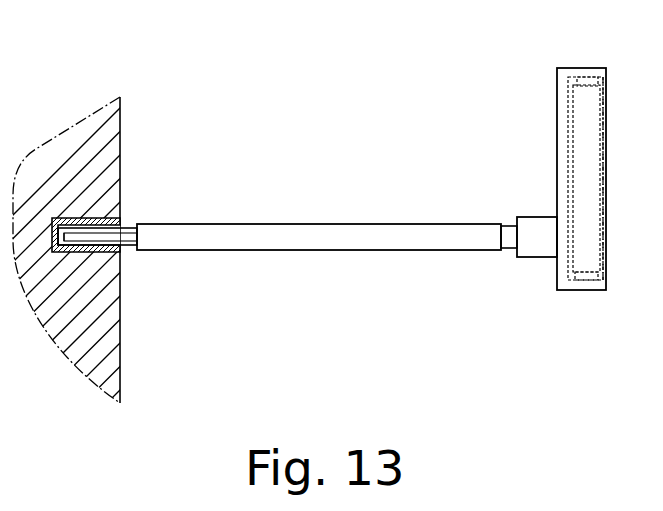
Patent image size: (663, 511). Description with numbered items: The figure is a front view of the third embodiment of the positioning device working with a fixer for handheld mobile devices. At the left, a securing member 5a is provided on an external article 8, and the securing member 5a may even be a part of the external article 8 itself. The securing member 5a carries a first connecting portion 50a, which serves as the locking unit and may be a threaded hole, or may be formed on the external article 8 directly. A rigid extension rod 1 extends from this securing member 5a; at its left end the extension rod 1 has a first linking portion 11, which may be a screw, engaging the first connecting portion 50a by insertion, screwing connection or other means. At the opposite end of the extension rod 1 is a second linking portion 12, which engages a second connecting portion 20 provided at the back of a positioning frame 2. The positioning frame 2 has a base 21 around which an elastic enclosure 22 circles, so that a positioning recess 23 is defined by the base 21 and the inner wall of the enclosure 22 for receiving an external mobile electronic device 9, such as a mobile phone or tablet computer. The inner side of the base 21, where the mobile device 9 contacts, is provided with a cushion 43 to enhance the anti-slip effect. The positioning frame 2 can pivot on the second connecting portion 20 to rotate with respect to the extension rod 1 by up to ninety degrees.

The extension rod 1 is at (313, 223).
The positioning frame 2 is at (560, 178).
The securing member 5a is at (88, 253).
The external article 8 is at (85, 153).
The external mobile electronic device 9 is at (606, 255).
The first linking portion 11 is at (113, 238).
The second linking portion 12 is at (508, 245).
The second connecting portion 20 is at (534, 224).
The base 21 is at (560, 145).
The elastic enclosure 22 is at (588, 72).
The positioning recess 23 is at (607, 88).
The cushion 43 is at (577, 77).
The first connecting portion 50a is at (83, 235).